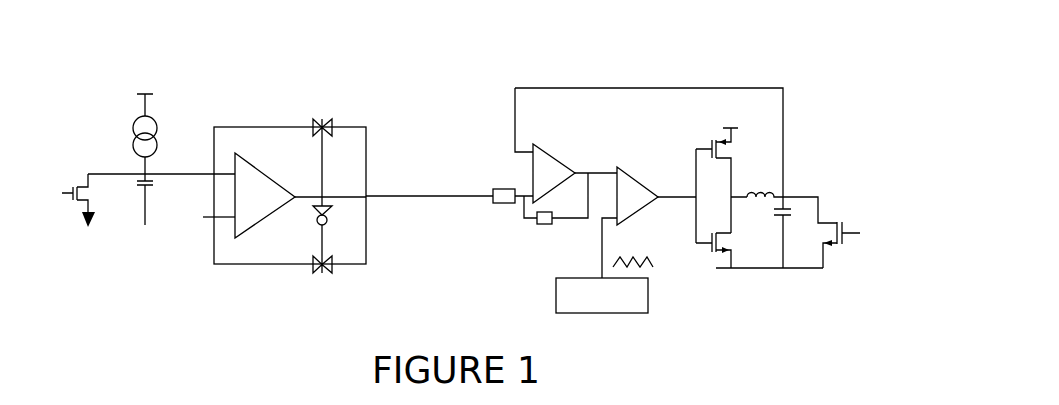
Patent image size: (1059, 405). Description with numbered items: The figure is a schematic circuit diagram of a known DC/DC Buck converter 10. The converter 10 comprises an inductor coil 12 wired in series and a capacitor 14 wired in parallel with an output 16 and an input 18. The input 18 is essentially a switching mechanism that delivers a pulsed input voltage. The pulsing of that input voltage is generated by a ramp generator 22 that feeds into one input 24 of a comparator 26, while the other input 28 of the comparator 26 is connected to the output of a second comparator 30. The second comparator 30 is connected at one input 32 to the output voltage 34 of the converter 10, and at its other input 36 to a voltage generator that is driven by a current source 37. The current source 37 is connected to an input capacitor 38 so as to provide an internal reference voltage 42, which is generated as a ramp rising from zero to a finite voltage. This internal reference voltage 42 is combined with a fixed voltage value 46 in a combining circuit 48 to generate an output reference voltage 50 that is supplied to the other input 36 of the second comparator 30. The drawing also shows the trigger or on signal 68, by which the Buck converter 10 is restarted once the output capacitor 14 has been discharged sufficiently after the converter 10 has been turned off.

The DC/DC Buck converter 10 is at (775, 64).
The inductor coil 12 is at (758, 190).
The capacitor 14 is at (780, 218).
The output 16 is at (857, 235).
The input 18 is at (704, 276).
The ramp generator 22 is at (602, 295).
The input of comparator 24 is at (600, 233).
The comparator 26 is at (656, 196).
The other input of comparator 28 is at (597, 173).
The second comparator 30 is at (554, 173).
The input of second comparator 32 is at (513, 120).
The output voltage 34 is at (649, 133).
The other input of second comparator 36 is at (523, 204).
The current source 37 is at (156, 120).
The input capacitor 38 is at (137, 187).
The internal reference voltage 42 is at (161, 164).
The fixed voltage value 46 is at (204, 219).
The combining circuit 48 is at (290, 196).
The output reference voltage 50 is at (429, 185).
The on signal 68 is at (70, 194).